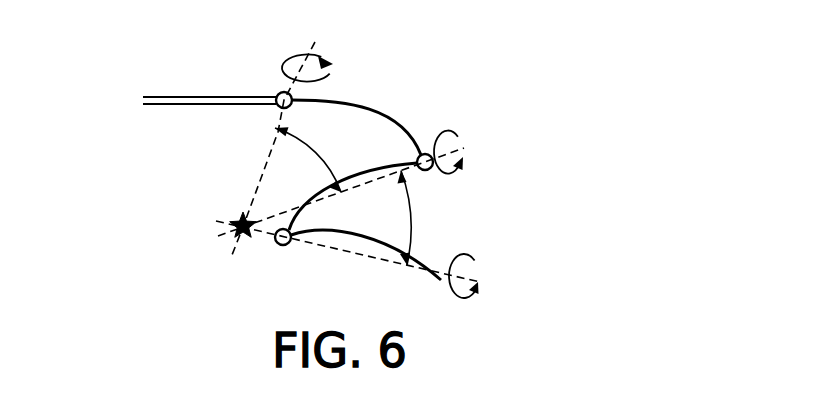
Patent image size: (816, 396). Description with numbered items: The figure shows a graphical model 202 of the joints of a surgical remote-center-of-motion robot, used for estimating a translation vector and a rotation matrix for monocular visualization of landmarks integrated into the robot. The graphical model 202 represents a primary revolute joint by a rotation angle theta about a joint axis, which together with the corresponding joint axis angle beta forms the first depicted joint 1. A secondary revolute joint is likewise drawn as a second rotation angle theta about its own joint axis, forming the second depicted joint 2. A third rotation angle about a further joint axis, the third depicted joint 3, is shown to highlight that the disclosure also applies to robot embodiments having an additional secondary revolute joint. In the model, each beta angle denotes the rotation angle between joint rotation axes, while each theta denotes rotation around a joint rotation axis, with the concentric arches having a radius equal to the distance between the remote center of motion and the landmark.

The graphical model 202 is at (391, 158).
The first joint (rotation angle θ1) 1 is at (307, 61).
The second joint (rotation angle θ2) 2 is at (455, 152).
The third joint (rotation angle θ3) 3 is at (392, 265).